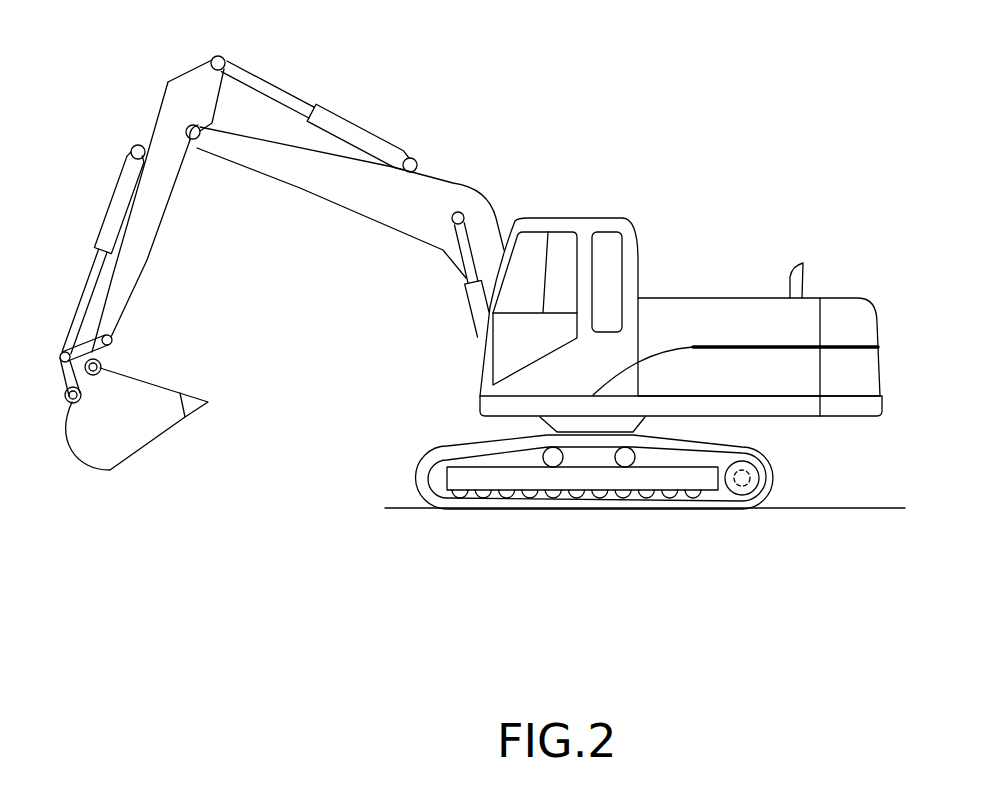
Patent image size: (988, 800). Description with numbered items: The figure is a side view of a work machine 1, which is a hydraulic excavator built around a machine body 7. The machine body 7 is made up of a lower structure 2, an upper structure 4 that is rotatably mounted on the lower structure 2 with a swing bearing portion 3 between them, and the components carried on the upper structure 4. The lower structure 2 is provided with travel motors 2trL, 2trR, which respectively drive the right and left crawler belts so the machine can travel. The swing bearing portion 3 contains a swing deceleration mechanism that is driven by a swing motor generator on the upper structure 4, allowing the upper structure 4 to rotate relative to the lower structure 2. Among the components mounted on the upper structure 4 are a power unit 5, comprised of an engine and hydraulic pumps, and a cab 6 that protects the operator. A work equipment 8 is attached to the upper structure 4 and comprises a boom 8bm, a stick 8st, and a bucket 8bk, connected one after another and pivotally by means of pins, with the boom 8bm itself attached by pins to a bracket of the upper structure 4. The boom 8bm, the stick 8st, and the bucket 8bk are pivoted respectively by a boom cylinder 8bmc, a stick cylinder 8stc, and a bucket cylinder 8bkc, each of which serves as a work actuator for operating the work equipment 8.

The work machine 1 is at (853, 167).
The lower structure 2 is at (777, 478).
The travel motor 2trL is at (803, 520).
The travel motor 2trR is at (743, 492).
The swing bearing portion 3 is at (633, 425).
The upper structure 4 is at (850, 418).
The power unit 5 is at (733, 295).
The cab 6 is at (560, 218).
The machine body 7 is at (480, 400).
The work equipment 8 is at (453, 183).
The boom 8bm is at (362, 202).
The boom cylinder 8bmc is at (473, 310).
The stick 8st is at (148, 242).
The stick cylinder 8stc is at (343, 130).
The bucket 8bk is at (118, 450).
The bucket cylinder 8bkc is at (113, 200).